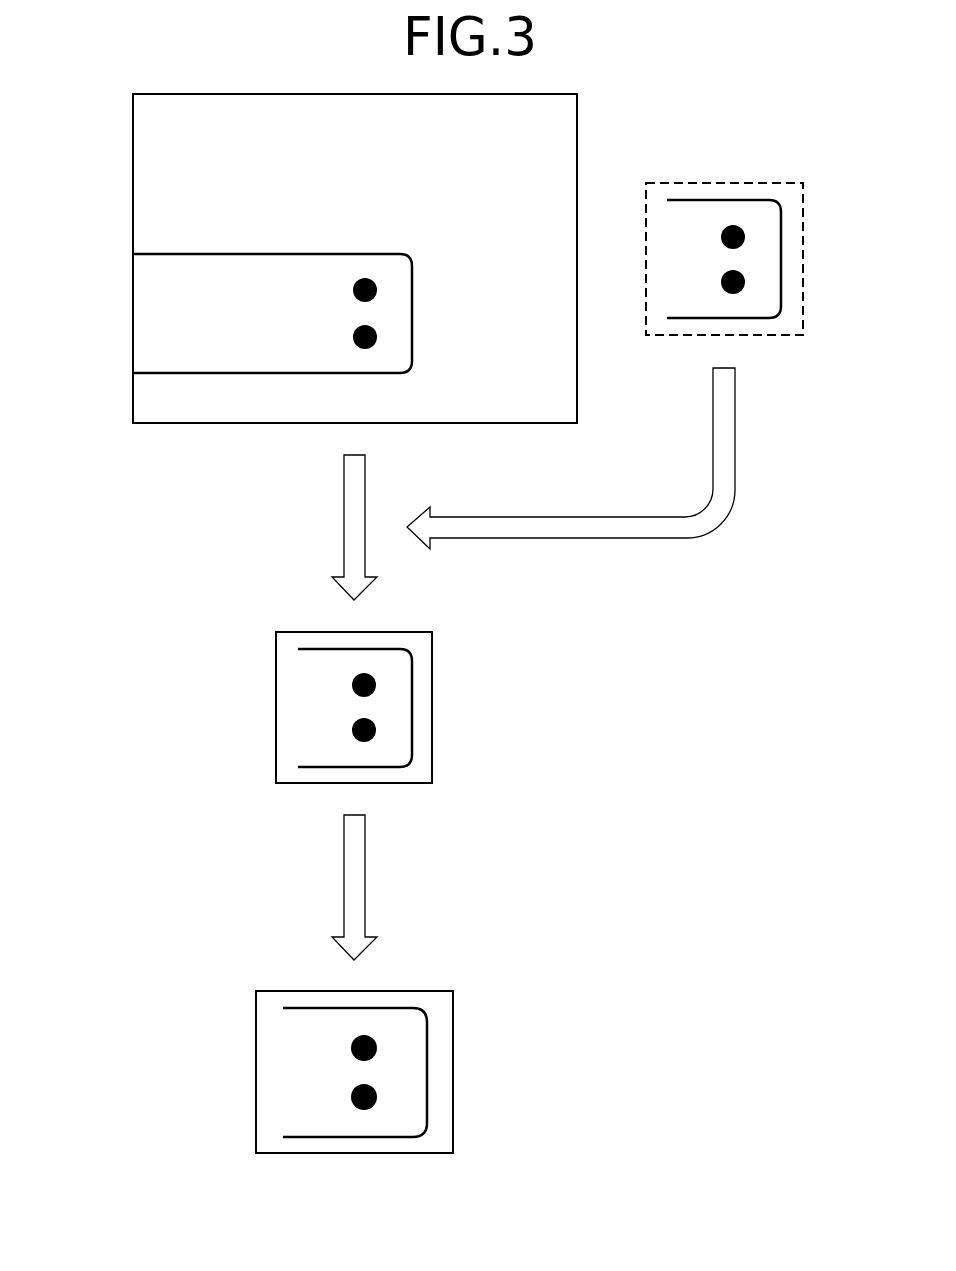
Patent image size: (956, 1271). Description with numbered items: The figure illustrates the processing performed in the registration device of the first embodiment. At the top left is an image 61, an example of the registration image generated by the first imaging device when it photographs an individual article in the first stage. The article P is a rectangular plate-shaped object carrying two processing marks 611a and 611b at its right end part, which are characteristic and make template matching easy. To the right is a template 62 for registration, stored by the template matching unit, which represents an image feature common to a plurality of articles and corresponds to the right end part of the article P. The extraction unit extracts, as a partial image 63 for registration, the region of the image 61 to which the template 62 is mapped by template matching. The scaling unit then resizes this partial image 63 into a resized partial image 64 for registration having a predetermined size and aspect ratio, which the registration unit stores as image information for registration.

The image 61 is at (133, 172).
The article P is at (272, 253).
The processing mark 611a is at (377, 292).
The processing mark 611b is at (377, 338).
The template for registration 62 is at (724, 183).
The partial image for registration 63 is at (276, 708).
The resized partial image for registration 64 is at (256, 1073).